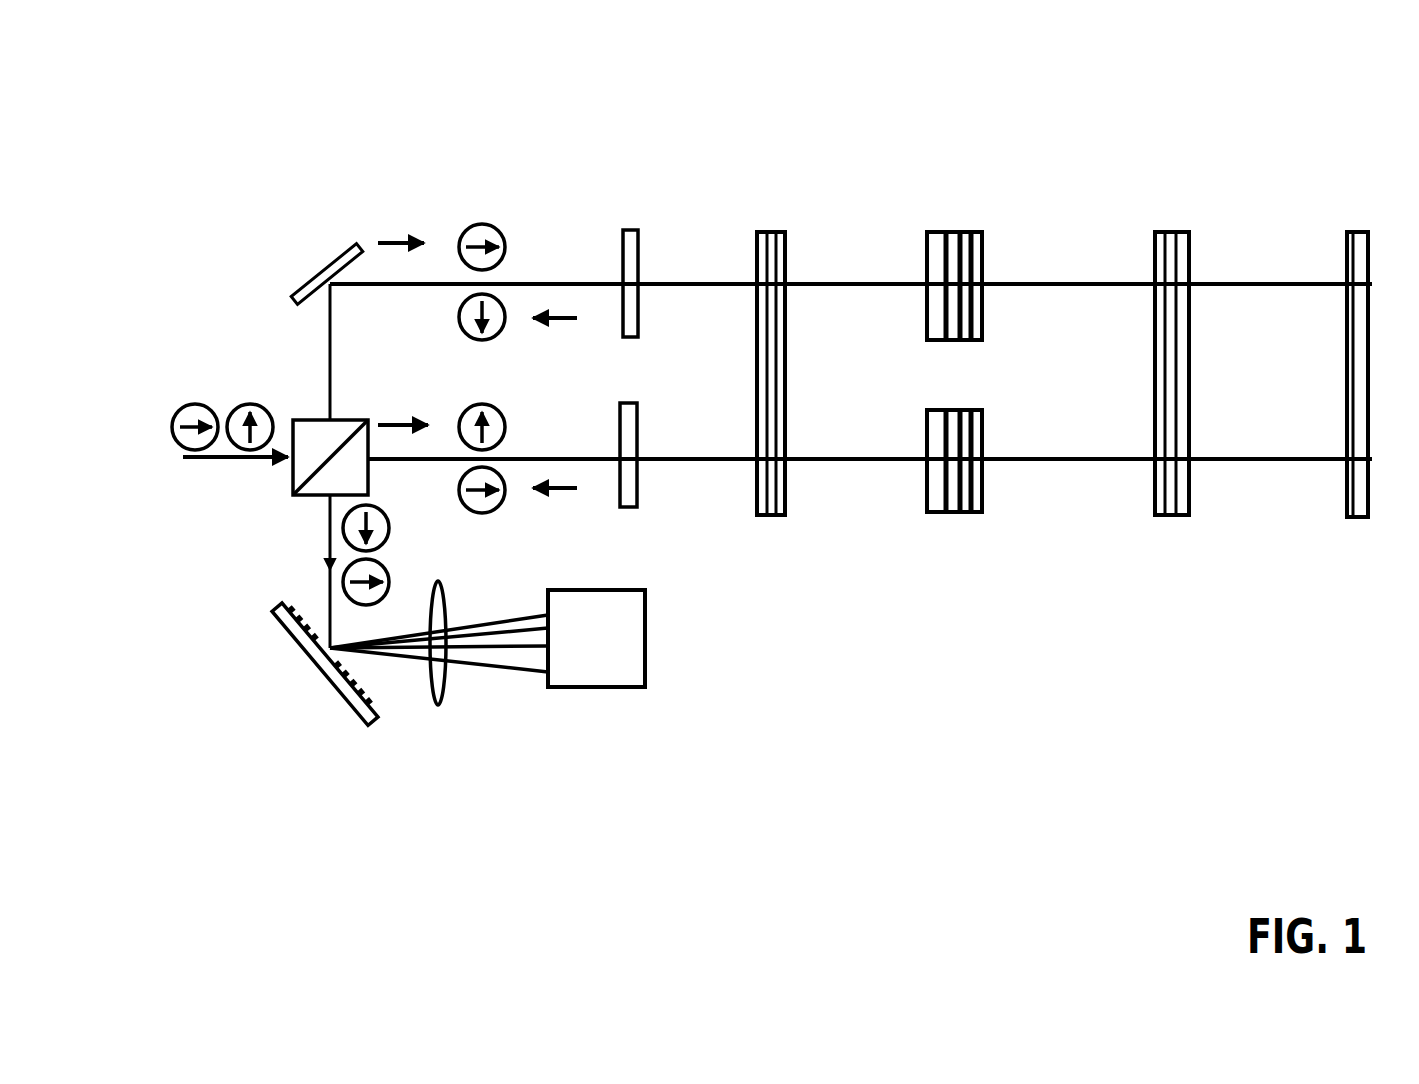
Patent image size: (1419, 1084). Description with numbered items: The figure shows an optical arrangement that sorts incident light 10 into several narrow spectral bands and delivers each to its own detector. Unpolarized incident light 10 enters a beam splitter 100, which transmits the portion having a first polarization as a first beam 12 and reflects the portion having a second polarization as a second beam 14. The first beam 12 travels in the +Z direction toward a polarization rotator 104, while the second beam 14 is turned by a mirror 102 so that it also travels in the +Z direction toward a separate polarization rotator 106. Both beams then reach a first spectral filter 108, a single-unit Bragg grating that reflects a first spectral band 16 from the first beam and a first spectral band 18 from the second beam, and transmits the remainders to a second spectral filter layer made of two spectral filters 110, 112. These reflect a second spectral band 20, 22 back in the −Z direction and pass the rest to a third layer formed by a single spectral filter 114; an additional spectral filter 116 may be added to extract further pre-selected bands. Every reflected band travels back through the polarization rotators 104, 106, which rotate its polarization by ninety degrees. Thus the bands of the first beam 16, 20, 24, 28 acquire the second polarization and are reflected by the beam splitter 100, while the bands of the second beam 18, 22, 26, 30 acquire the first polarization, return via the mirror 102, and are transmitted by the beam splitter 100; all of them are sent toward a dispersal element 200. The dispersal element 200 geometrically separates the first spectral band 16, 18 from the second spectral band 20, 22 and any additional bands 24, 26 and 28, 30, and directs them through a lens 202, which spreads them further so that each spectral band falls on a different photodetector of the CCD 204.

The incident light 10 is at (200, 444).
The first beam 12 is at (402, 436).
The second beam 14 is at (408, 258).
The first spectral band of the first beam 16 is at (715, 498).
The first spectral band of the second beam 18 is at (713, 324).
The second spectral band of the first beam 20 is at (875, 497).
The second spectral band of the second beam 22 is at (870, 318).
The additional reflected spectral band of the first beam 24 is at (1095, 505).
The additional reflected spectral band of the second beam 26 is at (1090, 318).
The additional reflected spectral band of the first beam 28 is at (1275, 505).
The additional reflected spectral band of the second beam 30 is at (1305, 320).
The beam splitter 100 is at (310, 420).
The mirror 102 is at (313, 272).
The polarization rotator 104 is at (627, 403).
The polarization rotator 106 is at (617, 230).
The first spectral filter 108 is at (780, 232).
The spectral filter 110 is at (978, 505).
The spectral filter 112 is at (965, 232).
The spectral filter 114 is at (1177, 232).
The spectral filter 116 is at (1355, 232).
The dispersal element 200 is at (340, 703).
The lens 202 is at (442, 708).
The CCD 204 is at (618, 688).